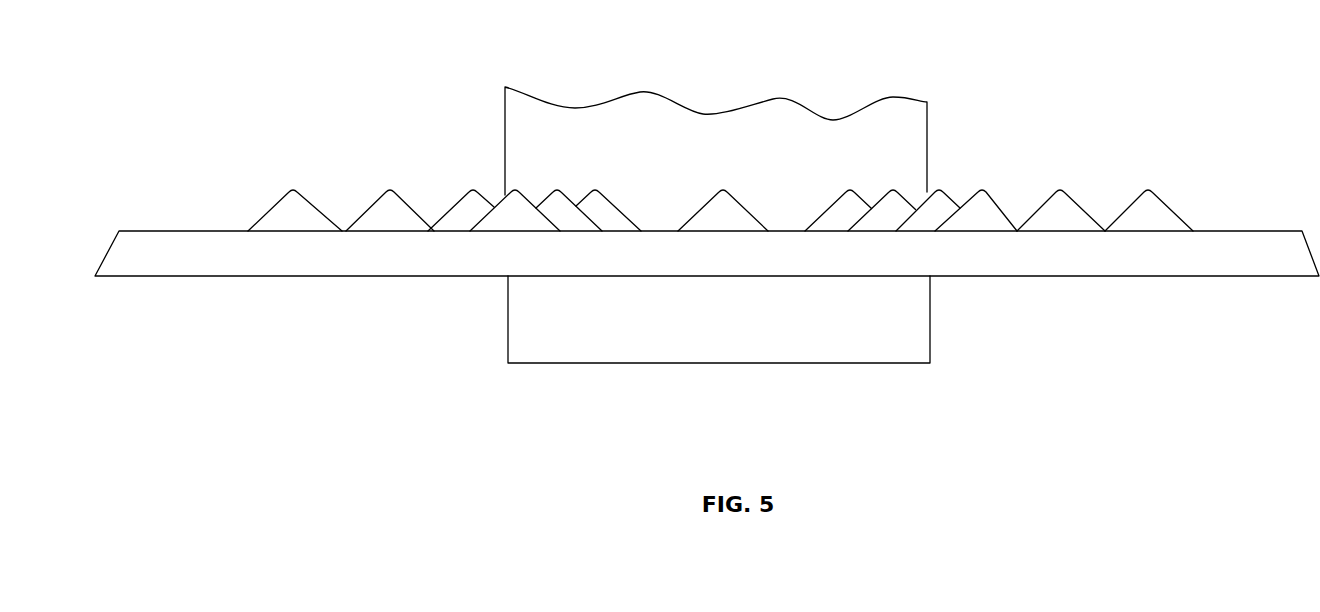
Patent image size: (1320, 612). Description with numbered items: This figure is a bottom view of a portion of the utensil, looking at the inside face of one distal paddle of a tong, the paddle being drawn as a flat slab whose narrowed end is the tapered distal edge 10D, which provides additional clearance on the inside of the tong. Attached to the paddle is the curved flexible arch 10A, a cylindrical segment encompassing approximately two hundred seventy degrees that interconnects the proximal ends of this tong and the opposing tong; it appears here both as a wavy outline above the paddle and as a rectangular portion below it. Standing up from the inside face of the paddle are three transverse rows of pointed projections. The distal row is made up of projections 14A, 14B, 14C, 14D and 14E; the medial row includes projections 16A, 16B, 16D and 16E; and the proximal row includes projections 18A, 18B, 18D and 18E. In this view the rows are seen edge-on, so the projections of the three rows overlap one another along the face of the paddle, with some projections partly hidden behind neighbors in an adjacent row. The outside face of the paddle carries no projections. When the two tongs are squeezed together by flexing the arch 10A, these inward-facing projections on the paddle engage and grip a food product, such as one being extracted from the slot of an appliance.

The curved flexible arch 10A is at (702, 110).
The tapered distal edge 10D is at (462, 262).
The projection 14A is at (275, 198).
The projection 14B is at (490, 195).
The projection 14C is at (733, 194).
The projection 14D is at (950, 192).
The projection 14E is at (1152, 188).
The projection 16A is at (377, 197).
The projection 16B is at (557, 183).
The projection 16D is at (897, 186).
The projection 16E is at (1075, 195).
The projection 18A is at (453, 193).
The projection 18B is at (603, 186).
The projection 18D is at (836, 198).
The projection 18E is at (993, 193).